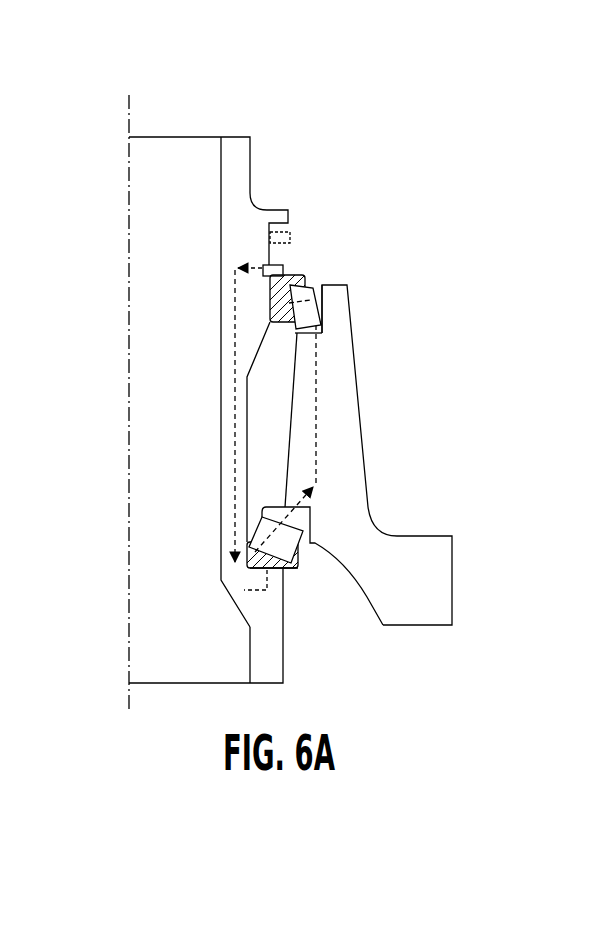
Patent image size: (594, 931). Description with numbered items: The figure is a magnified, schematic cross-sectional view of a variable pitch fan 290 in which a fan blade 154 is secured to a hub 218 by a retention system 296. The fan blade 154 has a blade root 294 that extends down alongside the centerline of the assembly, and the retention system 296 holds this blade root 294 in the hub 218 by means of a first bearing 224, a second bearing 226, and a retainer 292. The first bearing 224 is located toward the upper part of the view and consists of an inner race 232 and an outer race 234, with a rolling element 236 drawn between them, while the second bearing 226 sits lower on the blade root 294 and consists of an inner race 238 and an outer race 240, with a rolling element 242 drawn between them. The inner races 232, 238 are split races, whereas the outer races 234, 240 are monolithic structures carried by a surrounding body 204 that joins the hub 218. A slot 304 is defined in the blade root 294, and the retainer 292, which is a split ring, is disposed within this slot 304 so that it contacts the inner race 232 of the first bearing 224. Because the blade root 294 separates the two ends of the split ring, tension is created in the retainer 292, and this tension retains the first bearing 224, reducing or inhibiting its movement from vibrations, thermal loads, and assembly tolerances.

The variable pitch fan 290 is at (96, 136).
The fan blade 154 is at (237, 158).
The slot 304 is at (260, 265).
The inner race 232 is at (270, 307).
The roller 236 is at (297, 316).
The roller 242 is at (275, 550).
The inner race 238 is at (253, 562).
The blade root 294 is at (273, 657).
The retention system 296 is at (314, 216).
The retainer 292 is at (281, 273).
The first bearing 224 is at (320, 300).
The outer race 234 is at (322, 332).
The hub 204 is at (347, 398).
The outer race 240 is at (290, 532).
The hub 218 is at (422, 585).
The second bearing 226 is at (295, 568).